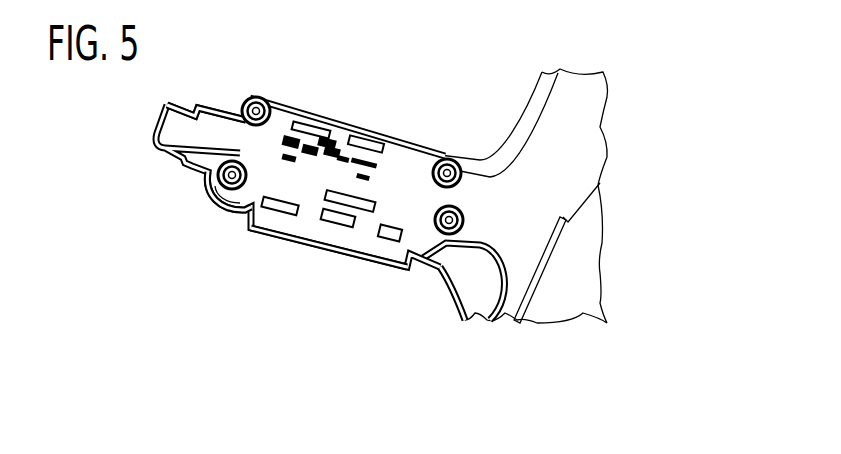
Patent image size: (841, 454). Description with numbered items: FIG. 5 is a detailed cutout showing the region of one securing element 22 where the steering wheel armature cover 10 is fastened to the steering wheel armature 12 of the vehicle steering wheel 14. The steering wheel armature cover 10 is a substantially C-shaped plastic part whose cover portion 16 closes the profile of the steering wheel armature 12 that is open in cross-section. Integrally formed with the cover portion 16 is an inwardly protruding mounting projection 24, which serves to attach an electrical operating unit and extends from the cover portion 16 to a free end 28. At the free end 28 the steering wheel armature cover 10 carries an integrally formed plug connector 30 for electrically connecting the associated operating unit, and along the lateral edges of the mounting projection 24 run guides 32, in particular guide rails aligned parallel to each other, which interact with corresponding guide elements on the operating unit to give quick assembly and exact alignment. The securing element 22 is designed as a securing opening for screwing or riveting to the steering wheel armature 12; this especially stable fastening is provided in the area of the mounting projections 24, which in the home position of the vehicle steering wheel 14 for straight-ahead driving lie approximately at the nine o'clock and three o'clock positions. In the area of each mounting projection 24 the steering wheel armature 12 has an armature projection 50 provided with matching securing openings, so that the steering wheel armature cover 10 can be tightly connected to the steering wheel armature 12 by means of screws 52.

The steering wheel armature cover 10 is at (585, 167).
The steering wheel armature 12 is at (598, 277).
The vehicle steering wheel 14 is at (660, 70).
The cover portion 16 is at (583, 110).
The securing element 22 is at (196, 205).
The mounting projection 24 is at (337, 125).
The free end 28 is at (140, 136).
The plug connector 30 is at (185, 112).
The guides 32 is at (312, 240).
The armature projection 50 is at (464, 139).
The screws 52 is at (256, 106).